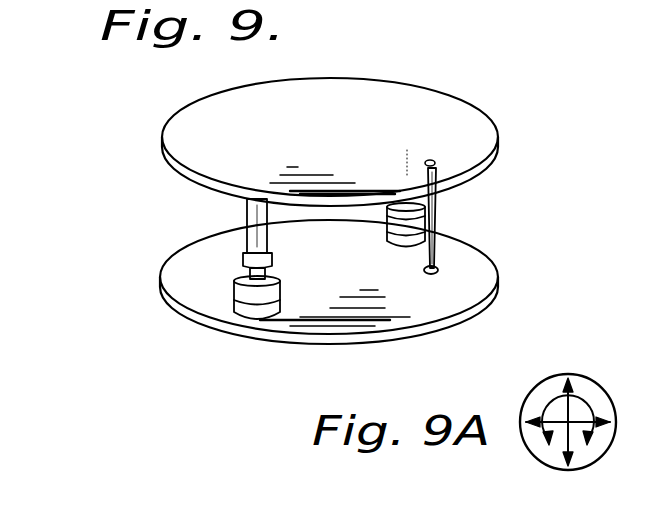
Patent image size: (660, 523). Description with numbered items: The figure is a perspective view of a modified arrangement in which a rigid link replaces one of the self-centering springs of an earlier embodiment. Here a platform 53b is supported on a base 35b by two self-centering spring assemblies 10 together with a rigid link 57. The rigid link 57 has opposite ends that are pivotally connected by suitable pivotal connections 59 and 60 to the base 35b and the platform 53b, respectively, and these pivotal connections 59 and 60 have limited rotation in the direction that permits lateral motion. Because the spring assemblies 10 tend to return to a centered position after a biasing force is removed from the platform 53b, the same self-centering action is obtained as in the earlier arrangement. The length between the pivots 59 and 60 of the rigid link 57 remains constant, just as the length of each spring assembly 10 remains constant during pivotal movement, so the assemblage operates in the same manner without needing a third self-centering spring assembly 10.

The vibration isolation mount assembly 10 is at (208, 88).
The upper plate 53b is at (388, 95).
The lower plate 35b is at (250, 333).
The pin 57 is at (437, 204).
The pin tip 59 is at (443, 263).
The pin head ring 60 is at (430, 158).